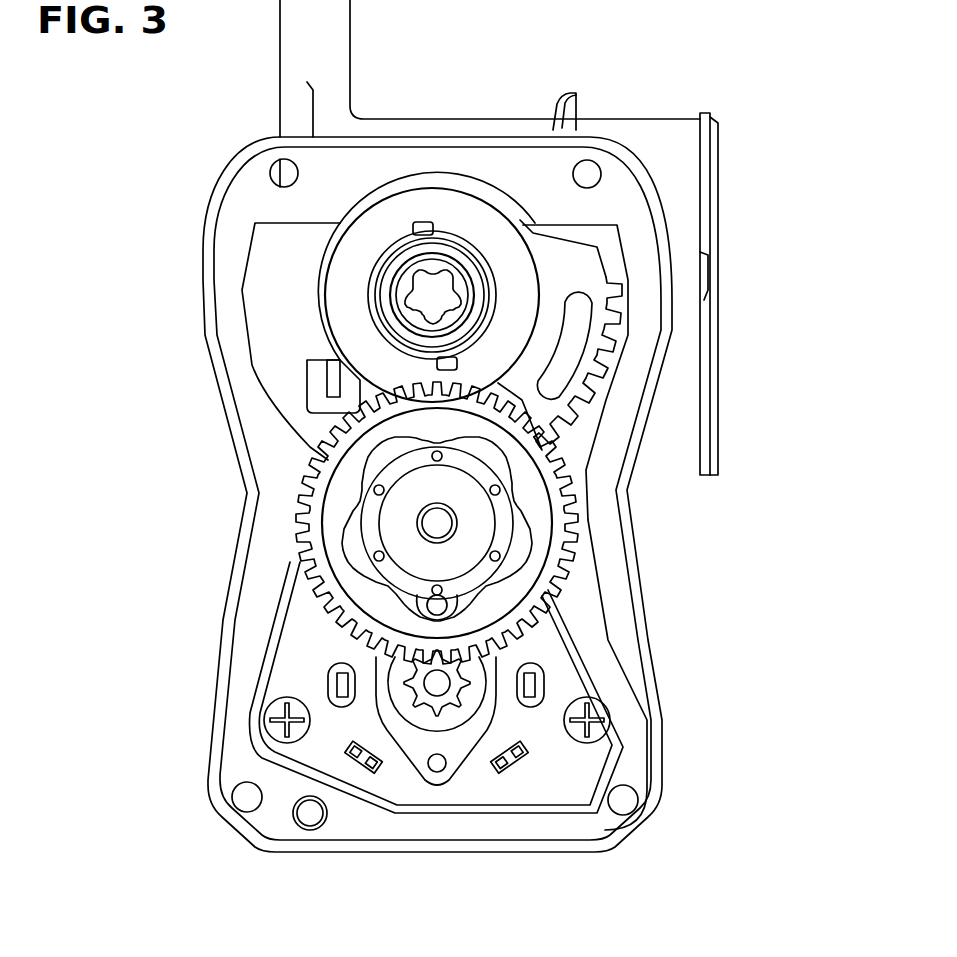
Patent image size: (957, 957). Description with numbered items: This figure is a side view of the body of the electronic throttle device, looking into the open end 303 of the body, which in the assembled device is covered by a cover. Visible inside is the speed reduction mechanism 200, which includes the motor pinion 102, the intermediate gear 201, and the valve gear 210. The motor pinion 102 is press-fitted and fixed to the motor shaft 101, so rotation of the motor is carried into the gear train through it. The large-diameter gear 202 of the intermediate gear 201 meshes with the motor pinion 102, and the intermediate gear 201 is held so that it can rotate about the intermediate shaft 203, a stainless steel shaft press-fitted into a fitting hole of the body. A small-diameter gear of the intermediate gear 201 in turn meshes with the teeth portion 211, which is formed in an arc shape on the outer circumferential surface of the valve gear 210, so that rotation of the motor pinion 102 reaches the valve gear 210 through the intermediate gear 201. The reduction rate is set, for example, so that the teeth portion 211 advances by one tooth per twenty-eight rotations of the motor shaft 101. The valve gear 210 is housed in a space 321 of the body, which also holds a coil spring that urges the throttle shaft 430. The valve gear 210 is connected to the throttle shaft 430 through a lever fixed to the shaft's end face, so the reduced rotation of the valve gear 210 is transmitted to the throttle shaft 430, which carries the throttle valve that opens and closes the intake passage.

The throttle shaft 430 is at (442, 287).
The valve gear 210 is at (560, 273).
The teeth portion 211 is at (608, 345).
The space 321 is at (287, 312).
The intermediate gear 201 is at (532, 492).
The speed reduction mechanism 200 is at (575, 507).
The large-diameter gear 202 is at (574, 553).
The intermediate shaft 203 is at (443, 533).
The motor pinion 102 is at (400, 661).
The motor shaft 101 is at (437, 683).
The open end 303 is at (633, 766).